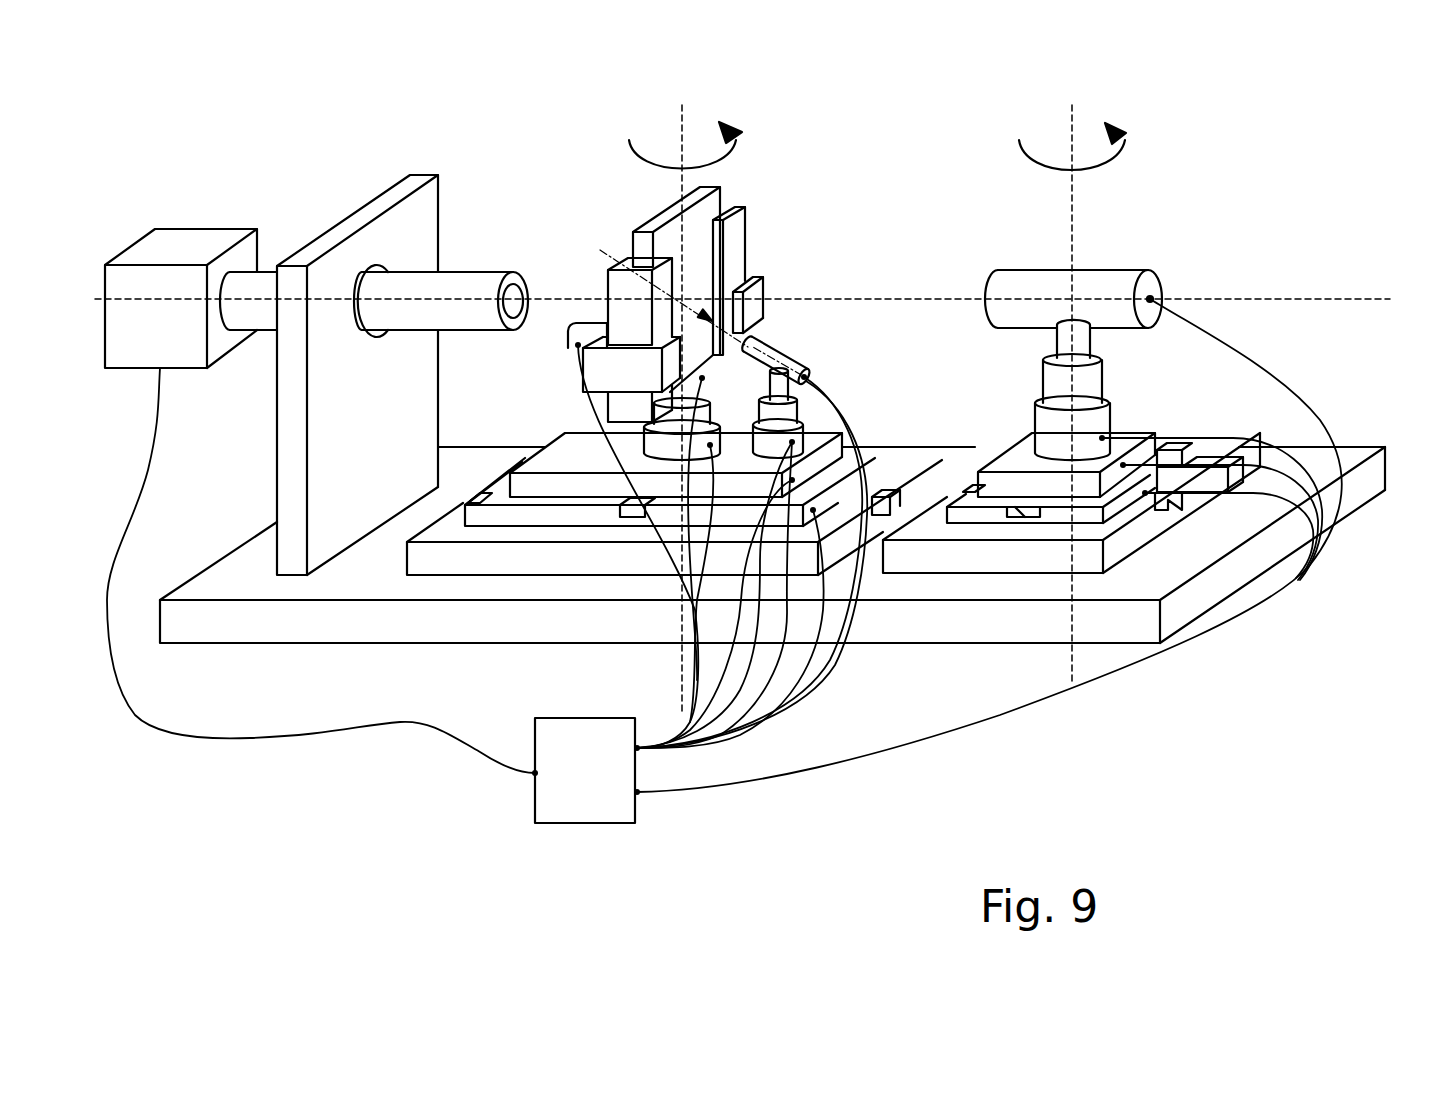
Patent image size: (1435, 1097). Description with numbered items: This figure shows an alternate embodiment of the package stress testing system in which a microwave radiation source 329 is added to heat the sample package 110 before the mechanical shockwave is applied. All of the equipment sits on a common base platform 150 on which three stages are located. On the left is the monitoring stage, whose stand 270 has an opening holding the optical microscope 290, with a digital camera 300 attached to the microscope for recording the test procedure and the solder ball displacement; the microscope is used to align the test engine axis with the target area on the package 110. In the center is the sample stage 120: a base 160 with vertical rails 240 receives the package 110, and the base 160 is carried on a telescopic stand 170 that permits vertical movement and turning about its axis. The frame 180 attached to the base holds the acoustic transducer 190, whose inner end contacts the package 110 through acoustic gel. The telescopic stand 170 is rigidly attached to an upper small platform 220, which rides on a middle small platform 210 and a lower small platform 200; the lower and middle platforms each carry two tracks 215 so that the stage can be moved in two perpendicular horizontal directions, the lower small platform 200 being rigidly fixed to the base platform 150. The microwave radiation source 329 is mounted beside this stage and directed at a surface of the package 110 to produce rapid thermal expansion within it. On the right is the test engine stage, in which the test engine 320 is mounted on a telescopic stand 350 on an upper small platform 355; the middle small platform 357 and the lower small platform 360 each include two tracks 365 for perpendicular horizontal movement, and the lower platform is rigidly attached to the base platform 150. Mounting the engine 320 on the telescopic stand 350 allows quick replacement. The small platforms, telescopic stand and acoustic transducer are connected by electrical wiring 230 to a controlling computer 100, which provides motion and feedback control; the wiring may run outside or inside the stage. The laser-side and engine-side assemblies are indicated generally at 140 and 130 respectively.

The controlling computer 100 is at (618, 802).
The sample package 110 is at (668, 240).
The sample stage 120 is at (770, 240).
The rotary sensor unit 130 is at (1267, 330).
The laser source unit 140 is at (314, 180).
The base platform 150 is at (312, 627).
The base 160 is at (618, 290).
The telescopic stand 170 is at (660, 445).
The frame 180 is at (600, 380).
The acoustic transducer 190 is at (587, 330).
The lower small platform 200 is at (905, 492).
The middle small platform 210 is at (842, 468).
The tracks 215 is at (883, 503).
The upper small platform 220 is at (810, 445).
The electrical wiring 230 is at (805, 700).
The vertical rails 240 is at (732, 205).
The stand 270 is at (297, 440).
The optical microscope 290 is at (457, 290).
The digital camera 300 is at (177, 245).
The test engine 320 is at (1018, 287).
The microwave radiation source 329 is at (792, 330).
The telescopic stand 350 is at (1058, 387).
The upper small platform 355 is at (1122, 447).
The middle small platform 357 is at (1158, 473).
The lower small platform 360 is at (1190, 478).
The tracks 365 is at (1022, 507).